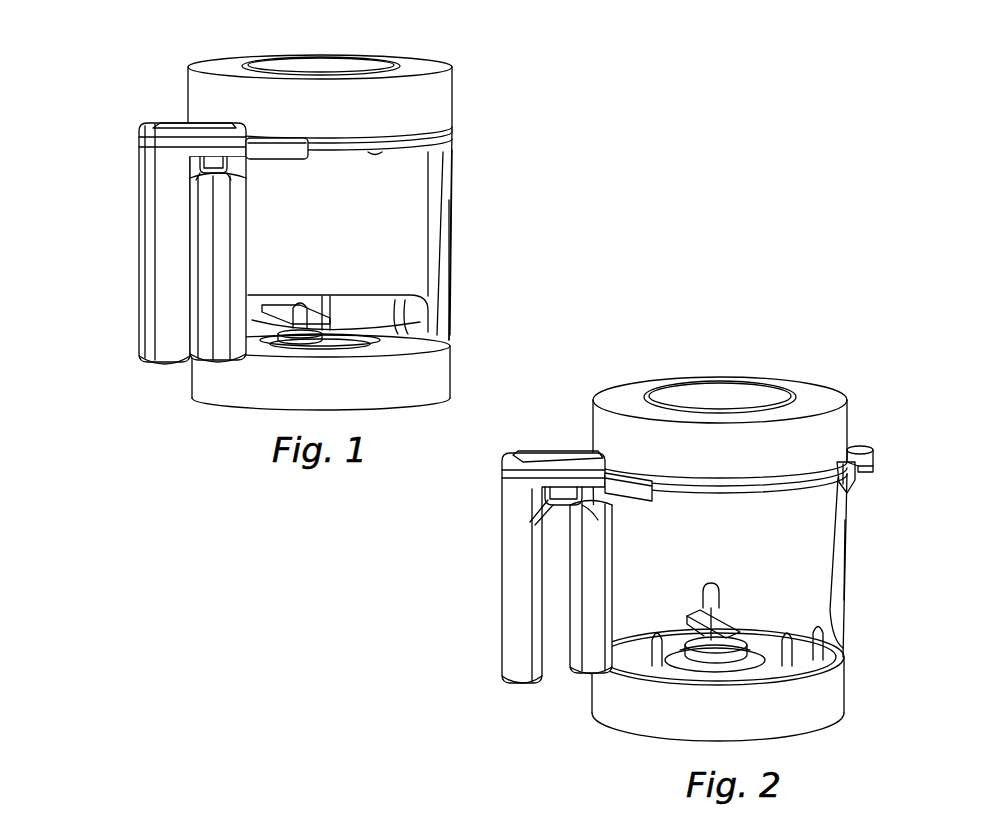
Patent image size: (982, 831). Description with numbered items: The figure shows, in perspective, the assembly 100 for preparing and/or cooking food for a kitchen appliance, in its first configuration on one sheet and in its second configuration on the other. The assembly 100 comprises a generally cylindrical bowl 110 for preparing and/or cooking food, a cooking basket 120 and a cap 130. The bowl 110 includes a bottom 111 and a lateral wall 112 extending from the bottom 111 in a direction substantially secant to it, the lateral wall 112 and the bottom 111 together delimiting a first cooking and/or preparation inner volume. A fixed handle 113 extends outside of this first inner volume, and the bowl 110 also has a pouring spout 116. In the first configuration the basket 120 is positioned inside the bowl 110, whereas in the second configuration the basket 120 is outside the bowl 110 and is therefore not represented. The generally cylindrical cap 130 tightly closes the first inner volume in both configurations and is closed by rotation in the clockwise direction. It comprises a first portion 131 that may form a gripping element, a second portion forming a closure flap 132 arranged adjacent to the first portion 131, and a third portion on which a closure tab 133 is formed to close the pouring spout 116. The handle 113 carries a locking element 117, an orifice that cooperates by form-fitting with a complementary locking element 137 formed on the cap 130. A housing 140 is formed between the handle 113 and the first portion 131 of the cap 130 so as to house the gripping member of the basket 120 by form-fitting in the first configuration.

In FIG. 1, the assembly 100 is at (150, 410).
In FIG. 2, the assembly 100 is at (572, 731).
In FIG. 1, the bowl 110 is at (470, 312).
In FIG. 2, the bowl 110 is at (864, 573).
In FIG. 1, the bottom 111 is at (437, 374).
In FIG. 2, the bottom 111 is at (817, 697).
In FIG. 1, the lateral wall 112 is at (440, 272).
In FIG. 2, the lateral wall 112 is at (833, 625).
In FIG. 1, the fixed handle 113 is at (146, 293).
In FIG. 2, the fixed handle 113 is at (520, 658).
In FIG. 2, the pouring spout 116 is at (855, 472).
In FIG. 1, the locking element 117 is at (208, 165).
In FIG. 2, the locking element 117 is at (565, 492).
In FIG. 1, the cooking basket 120 is at (410, 192).
In FIG. 1, the cap 130 is at (438, 98).
In FIG. 2, the cap 130 is at (832, 437).
In FIG. 1, the first portion 131 is at (173, 133).
In FIG. 2, the first portion 131 is at (525, 462).
In FIG. 1, the closure flap 132 is at (273, 150).
In FIG. 2, the closure flap 132 is at (633, 490).
In FIG. 2, the closure tab 133 is at (862, 447).
In FIG. 1, the complementary locking element 137 is at (213, 176).
In FIG. 2, the complementary locking element 137 is at (564, 512).
In FIG. 1, the housing 140 is at (135, 221).
In FIG. 2, the housing 140 is at (487, 553).